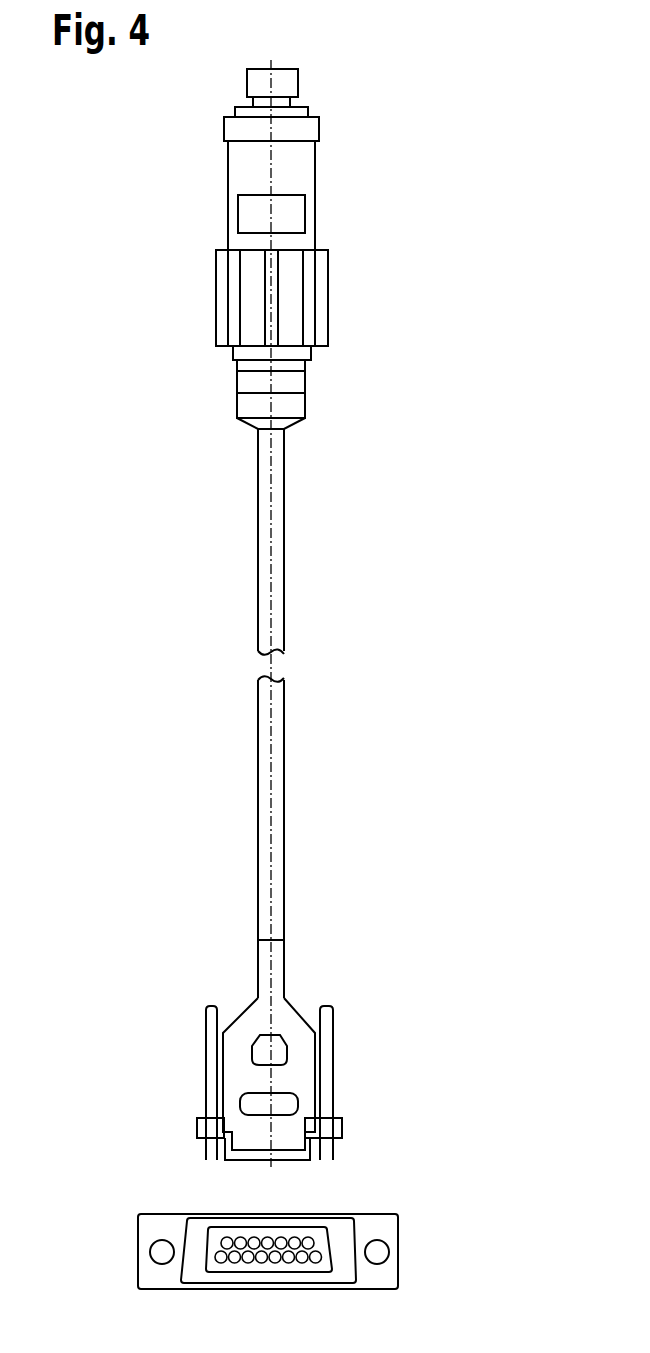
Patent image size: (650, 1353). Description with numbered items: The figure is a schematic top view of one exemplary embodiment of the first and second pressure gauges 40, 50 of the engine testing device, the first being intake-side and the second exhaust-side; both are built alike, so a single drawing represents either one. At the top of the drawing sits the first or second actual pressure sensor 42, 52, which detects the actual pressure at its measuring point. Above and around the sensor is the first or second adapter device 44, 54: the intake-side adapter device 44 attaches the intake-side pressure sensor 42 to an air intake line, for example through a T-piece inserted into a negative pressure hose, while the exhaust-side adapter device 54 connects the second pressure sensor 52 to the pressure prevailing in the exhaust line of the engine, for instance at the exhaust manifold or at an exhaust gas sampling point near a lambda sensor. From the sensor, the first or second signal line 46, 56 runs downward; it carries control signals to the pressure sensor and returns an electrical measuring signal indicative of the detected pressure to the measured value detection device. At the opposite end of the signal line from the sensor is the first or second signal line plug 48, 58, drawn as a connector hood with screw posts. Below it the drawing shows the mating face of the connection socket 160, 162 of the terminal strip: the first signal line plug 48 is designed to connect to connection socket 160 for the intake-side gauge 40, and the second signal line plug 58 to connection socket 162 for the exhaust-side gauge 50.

The first pressure gauge 40 is at (256, 614).
The second pressure gauge 50 is at (195, 353).
The first actual pressure sensor 42 is at (210, 298).
The second actual pressure sensor 52 is at (223, 273).
The first adapter device 44 is at (329, 249).
The second adapter device 54 is at (302, 159).
The first signal line 46 is at (331, 713).
The second signal line 56 is at (284, 708).
The first signal line plug 48 is at (212, 1079).
The second signal line plug 58 is at (235, 1064).
The connection socket 160 is at (341, 1250).
The connection socket 162 is at (387, 1232).